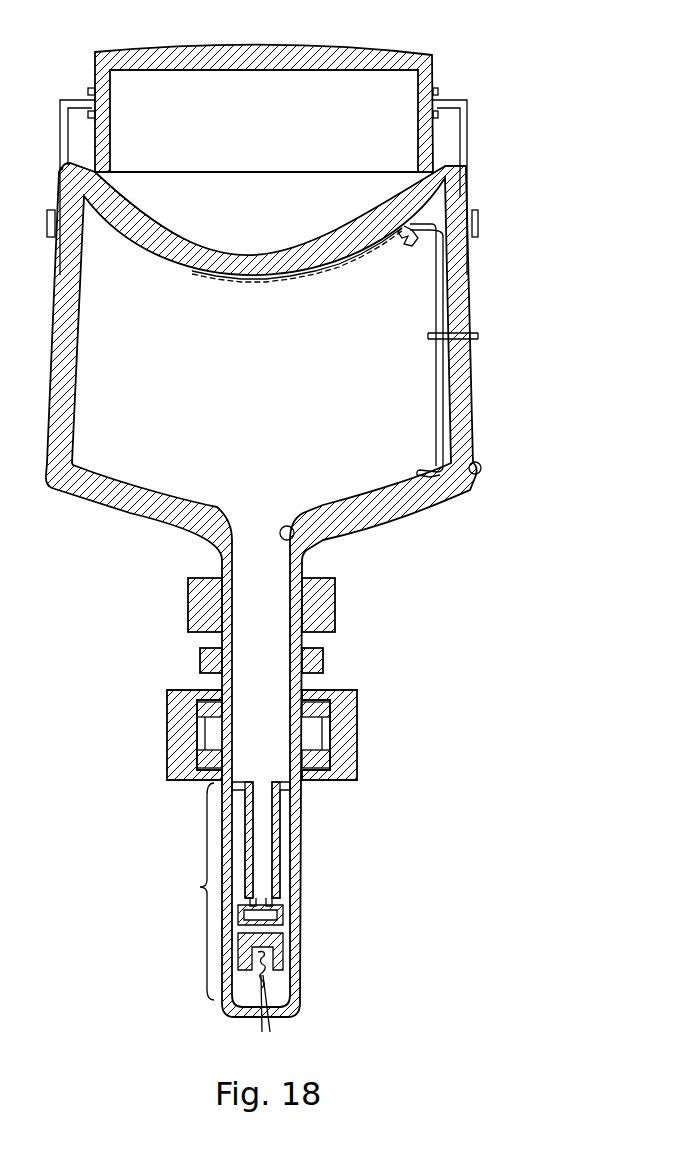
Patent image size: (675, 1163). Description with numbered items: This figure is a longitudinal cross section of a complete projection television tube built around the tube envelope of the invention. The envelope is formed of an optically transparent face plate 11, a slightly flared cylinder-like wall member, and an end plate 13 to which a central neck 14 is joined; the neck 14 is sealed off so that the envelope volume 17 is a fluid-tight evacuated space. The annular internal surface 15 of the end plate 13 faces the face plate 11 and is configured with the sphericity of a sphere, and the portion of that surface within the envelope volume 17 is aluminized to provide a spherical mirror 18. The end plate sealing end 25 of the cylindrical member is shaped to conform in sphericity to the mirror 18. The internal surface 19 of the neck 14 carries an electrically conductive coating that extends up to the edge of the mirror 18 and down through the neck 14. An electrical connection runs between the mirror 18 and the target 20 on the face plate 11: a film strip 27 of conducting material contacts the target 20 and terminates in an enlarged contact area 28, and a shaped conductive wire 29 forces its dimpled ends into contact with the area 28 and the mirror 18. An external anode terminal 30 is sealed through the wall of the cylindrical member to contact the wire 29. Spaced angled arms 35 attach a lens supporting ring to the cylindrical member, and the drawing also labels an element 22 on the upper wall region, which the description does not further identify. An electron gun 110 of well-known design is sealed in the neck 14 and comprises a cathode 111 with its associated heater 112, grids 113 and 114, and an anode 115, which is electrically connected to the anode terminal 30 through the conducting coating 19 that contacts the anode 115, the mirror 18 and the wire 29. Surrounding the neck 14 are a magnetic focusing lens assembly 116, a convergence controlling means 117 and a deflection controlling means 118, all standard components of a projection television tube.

The angled arms 35 is at (385, 52).
The outer wall 22 is at (455, 197).
The face plate 11 is at (170, 244).
The target 20 is at (245, 279).
The film strip 27 is at (360, 263).
The enlarged contact area 28 is at (403, 243).
The electrically conductive wire 29 is at (437, 292).
The external anode terminal 30 is at (477, 338).
The envelope volume 17 is at (272, 389).
The end plate sealing end 25 is at (480, 470).
The end plate 13 is at (428, 497).
The annular internal surface 15 is at (317, 507).
The mirror 18 is at (383, 493).
The internal surface of neck 19 is at (302, 548).
The neck 14 is at (302, 563).
The deflection controlling means 118 is at (330, 608).
The convergence controlling means 117 is at (323, 660).
The magnetic focusing lens assembly 116 is at (350, 731).
The anode 115 is at (275, 838).
The grid 114 is at (283, 913).
The grid 113 is at (283, 948).
The heater 112 is at (266, 977).
The cathode 111 is at (262, 987).
The electron gun 110 is at (200, 887).